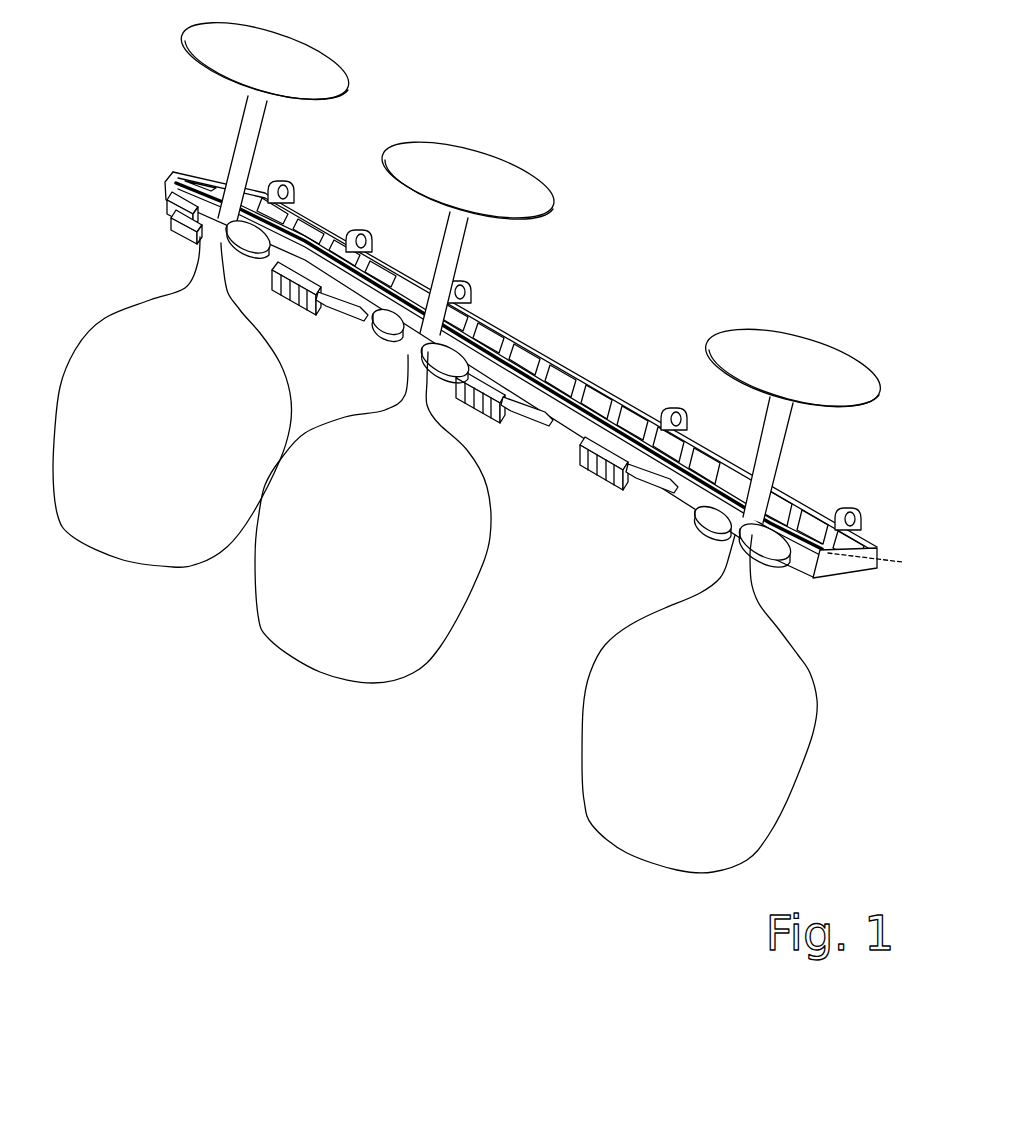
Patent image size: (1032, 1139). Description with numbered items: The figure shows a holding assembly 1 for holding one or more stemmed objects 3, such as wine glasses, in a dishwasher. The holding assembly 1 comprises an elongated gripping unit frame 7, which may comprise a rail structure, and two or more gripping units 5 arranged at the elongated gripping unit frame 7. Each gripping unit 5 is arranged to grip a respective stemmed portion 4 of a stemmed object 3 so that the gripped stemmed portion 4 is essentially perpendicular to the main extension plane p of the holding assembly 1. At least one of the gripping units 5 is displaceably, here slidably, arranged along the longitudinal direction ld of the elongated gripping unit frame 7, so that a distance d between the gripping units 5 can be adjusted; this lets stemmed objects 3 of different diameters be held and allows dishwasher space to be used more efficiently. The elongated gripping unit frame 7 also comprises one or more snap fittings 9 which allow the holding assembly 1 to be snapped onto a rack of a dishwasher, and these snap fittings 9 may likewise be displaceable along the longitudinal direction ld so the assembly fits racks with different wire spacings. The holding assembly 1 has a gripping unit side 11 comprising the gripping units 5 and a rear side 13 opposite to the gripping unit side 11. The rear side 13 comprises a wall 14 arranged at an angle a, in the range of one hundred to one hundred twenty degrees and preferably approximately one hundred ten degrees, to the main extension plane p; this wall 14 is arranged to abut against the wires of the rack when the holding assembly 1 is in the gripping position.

The holding assembly 1 is at (477, 440).
The stemmed object 3 is at (149, 439).
The stemmed portion 4 is at (237, 142).
The gripping unit 5 is at (167, 232).
The elongated gripping unit frame 7 is at (290, 228).
The snap fitting 9 is at (280, 180).
The gripping unit side 11 is at (172, 184).
The rear side 13 is at (408, 277).
The wall 14 is at (877, 577).
The angle a is at (860, 567).
The main extension plane p is at (893, 557).
The distance d is at (553, 405).
The longitudinal direction ld is at (580, 353).